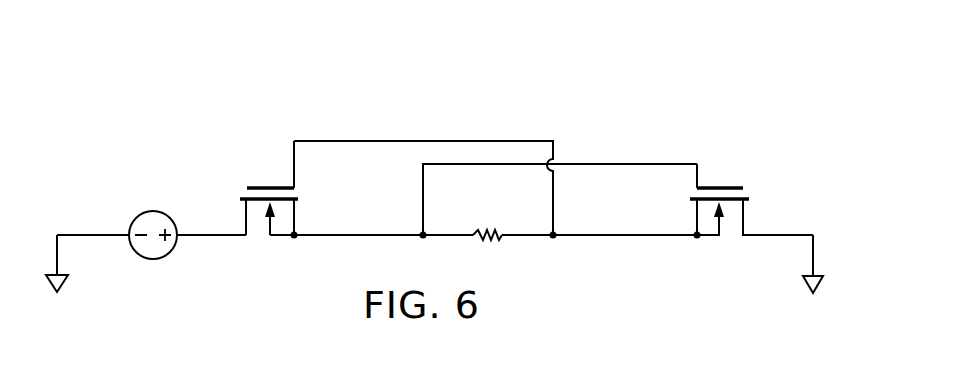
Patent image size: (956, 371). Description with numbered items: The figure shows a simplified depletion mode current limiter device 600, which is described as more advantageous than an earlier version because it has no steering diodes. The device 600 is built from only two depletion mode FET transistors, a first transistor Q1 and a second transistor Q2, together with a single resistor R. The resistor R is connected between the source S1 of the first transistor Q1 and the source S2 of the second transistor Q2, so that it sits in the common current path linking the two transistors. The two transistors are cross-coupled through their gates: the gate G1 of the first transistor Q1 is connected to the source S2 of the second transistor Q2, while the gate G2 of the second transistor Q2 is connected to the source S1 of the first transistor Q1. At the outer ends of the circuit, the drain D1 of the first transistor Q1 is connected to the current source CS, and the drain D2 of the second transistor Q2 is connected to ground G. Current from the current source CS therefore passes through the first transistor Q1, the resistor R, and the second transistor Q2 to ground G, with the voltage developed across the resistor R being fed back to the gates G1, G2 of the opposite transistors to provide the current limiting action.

The depletion mode current limiter device 600 is at (528, 93).
The current source CS is at (151, 221).
The first transistor Q1 is at (272, 207).
The drain of the first transistor D1 is at (229, 215).
The source of the first transistor S1 is at (311, 217).
The gate of the first transistor G1 is at (270, 164).
The resistor R is at (487, 223).
The second transistor Q2 is at (737, 212).
The drain of the second transistor D2 is at (778, 216).
The source of the second transistor S2 is at (681, 218).
The gate of the second transistor G2 is at (720, 168).
The ground G is at (434, 280).